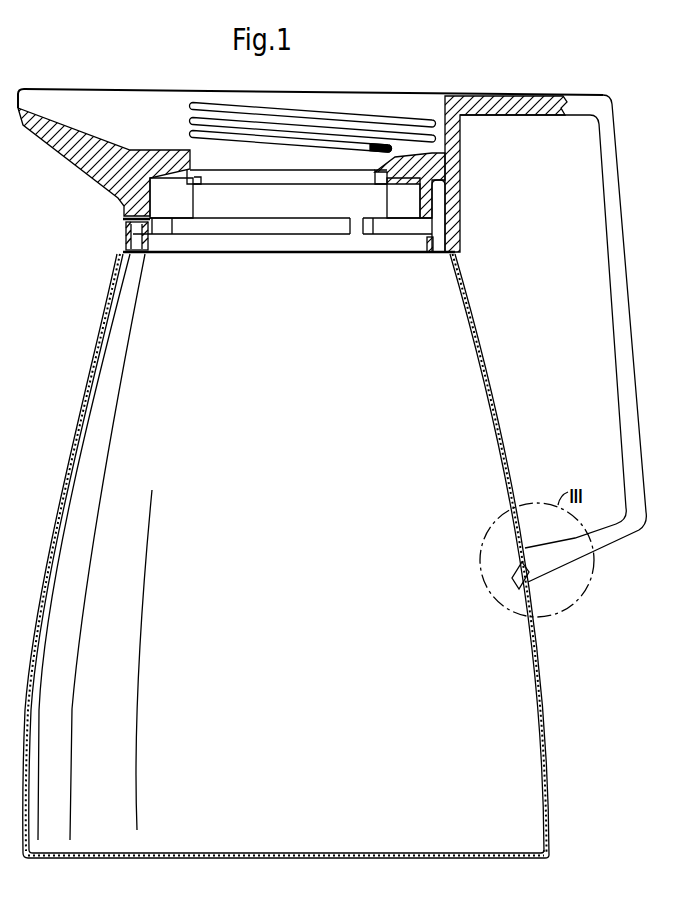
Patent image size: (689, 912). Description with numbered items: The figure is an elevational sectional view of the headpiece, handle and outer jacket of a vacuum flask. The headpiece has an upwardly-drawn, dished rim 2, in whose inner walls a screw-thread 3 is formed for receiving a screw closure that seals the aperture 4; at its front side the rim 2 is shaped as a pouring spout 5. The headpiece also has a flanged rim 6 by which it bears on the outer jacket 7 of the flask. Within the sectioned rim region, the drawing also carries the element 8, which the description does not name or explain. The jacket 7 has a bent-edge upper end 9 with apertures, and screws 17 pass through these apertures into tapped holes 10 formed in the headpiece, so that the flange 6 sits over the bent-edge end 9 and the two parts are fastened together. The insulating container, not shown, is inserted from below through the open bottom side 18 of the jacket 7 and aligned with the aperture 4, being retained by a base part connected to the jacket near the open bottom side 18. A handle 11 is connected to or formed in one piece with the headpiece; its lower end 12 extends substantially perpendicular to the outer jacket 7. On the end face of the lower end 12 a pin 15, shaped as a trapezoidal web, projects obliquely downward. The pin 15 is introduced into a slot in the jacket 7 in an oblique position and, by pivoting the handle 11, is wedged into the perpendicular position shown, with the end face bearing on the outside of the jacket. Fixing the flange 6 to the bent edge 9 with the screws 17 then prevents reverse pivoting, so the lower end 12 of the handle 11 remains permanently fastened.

The dished rim 2 is at (163, 95).
The screw-thread 3 is at (338, 113).
The aperture 4 is at (296, 186).
The pouring spout 5 is at (50, 135).
The flanged rim 6 is at (452, 222).
The outer jacket 7 is at (487, 370).
The sealing blocks 8 is at (172, 180).
The bent-edge upper end 9 is at (433, 254).
The tapped holes 10 is at (126, 237).
The handle 11 is at (612, 283).
The lower end of handle 12 is at (573, 555).
The pin 15 is at (517, 583).
The screws 17 is at (140, 254).
The open bottom side 18 is at (382, 855).